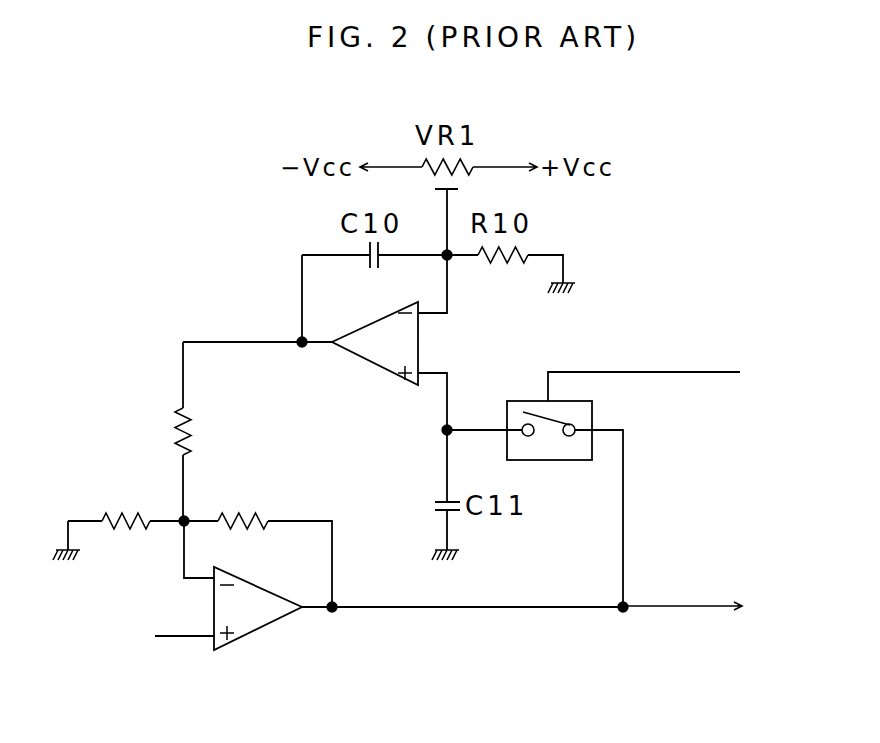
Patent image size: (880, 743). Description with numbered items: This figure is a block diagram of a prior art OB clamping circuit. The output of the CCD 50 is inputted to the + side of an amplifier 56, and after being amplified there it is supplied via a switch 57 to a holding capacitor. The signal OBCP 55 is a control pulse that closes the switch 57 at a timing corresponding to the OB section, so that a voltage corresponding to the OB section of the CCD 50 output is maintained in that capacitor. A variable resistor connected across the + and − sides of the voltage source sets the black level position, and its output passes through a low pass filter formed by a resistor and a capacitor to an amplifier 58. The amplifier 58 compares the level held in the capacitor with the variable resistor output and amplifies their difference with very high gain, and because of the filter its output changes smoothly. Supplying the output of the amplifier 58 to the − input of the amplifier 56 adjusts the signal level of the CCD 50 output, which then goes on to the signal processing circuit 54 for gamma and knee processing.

The CCD 50 is at (128, 639).
The signal processing circuit 54 is at (705, 650).
The signal OBCP 55 is at (644, 370).
The amplifier 56 is at (258, 628).
The switch 57 is at (575, 462).
The amplifier 58 is at (355, 355).